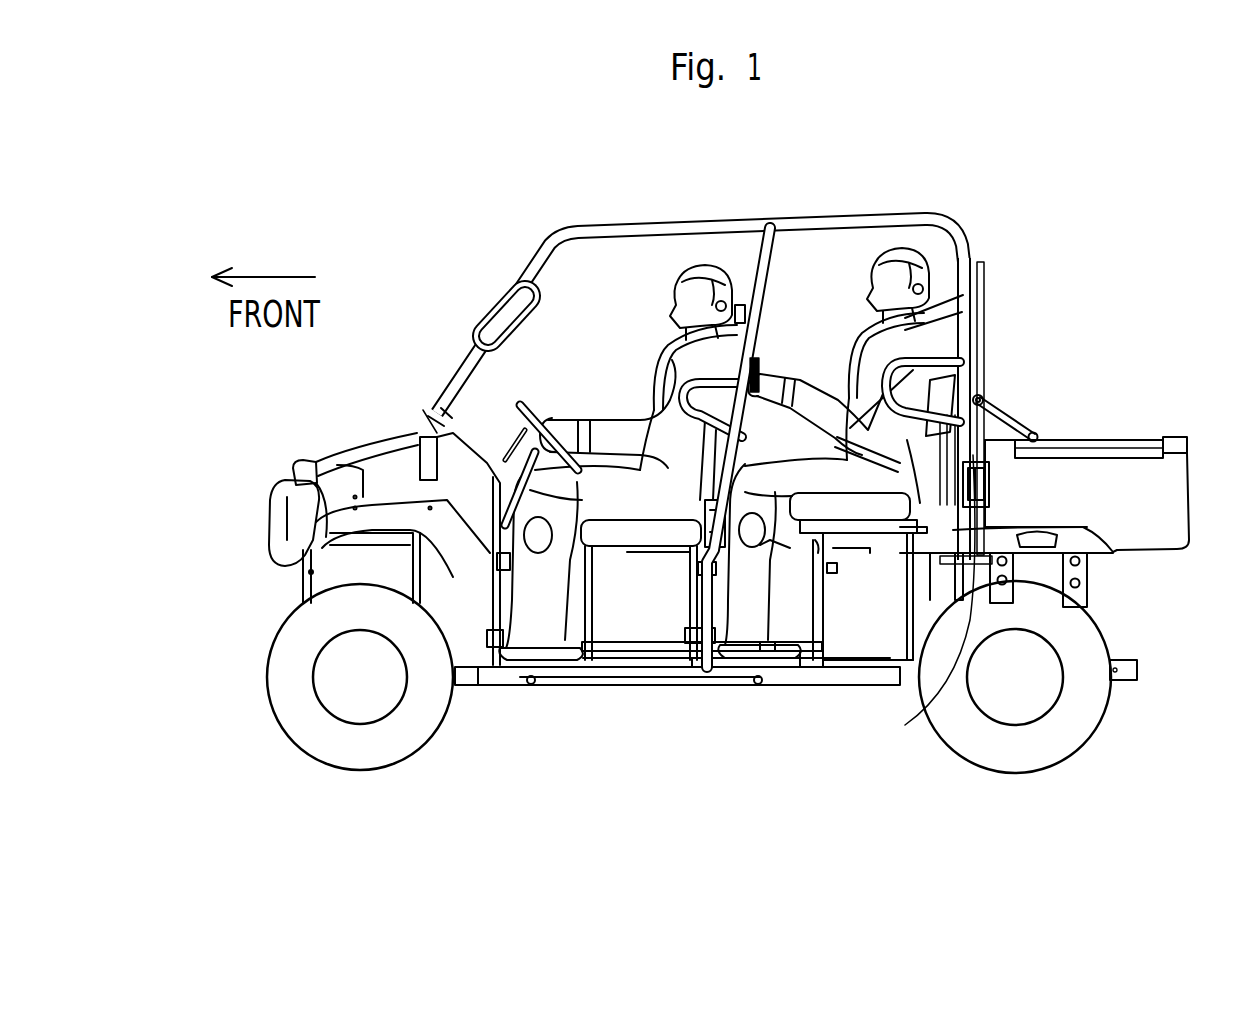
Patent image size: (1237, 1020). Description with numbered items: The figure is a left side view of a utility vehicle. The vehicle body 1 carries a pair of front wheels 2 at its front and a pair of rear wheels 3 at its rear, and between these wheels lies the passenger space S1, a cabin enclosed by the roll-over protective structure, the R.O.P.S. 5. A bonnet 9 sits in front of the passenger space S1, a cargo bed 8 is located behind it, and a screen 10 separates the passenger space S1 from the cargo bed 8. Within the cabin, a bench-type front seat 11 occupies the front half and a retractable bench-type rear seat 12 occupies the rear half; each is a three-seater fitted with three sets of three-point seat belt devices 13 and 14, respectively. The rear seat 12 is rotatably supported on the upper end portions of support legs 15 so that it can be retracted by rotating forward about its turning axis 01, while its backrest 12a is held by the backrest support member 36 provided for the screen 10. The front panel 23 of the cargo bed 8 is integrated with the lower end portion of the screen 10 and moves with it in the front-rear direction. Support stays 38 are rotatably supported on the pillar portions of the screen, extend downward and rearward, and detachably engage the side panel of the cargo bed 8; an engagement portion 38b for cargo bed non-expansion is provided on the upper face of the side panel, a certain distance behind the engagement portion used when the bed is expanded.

The vehicle body 1 is at (643, 687).
The front wheels 2 is at (297, 720).
The rear wheels 3 is at (1097, 700).
The R.O.P.S. 5 is at (498, 286).
The passenger space S1 is at (548, 365).
The cargo bed 8 is at (1128, 435).
The bonnet 9 is at (372, 447).
The screen 10 is at (984, 312).
The bench-type front seat 11 is at (624, 543).
The bench-type rear seat 12 is at (868, 512).
The backrest 12a is at (940, 392).
The three-point seat belt devices 13 is at (655, 352).
The three-point seat belt devices 14 is at (845, 345).
The support legs 15 is at (808, 608).
The turning axis 01 is at (810, 540).
The front panel 23 is at (910, 720).
The backrest support member 36 is at (995, 484).
The support stays 38 is at (1000, 412).
The engagement portion for cargo bed non-expansion 38b is at (1040, 435).